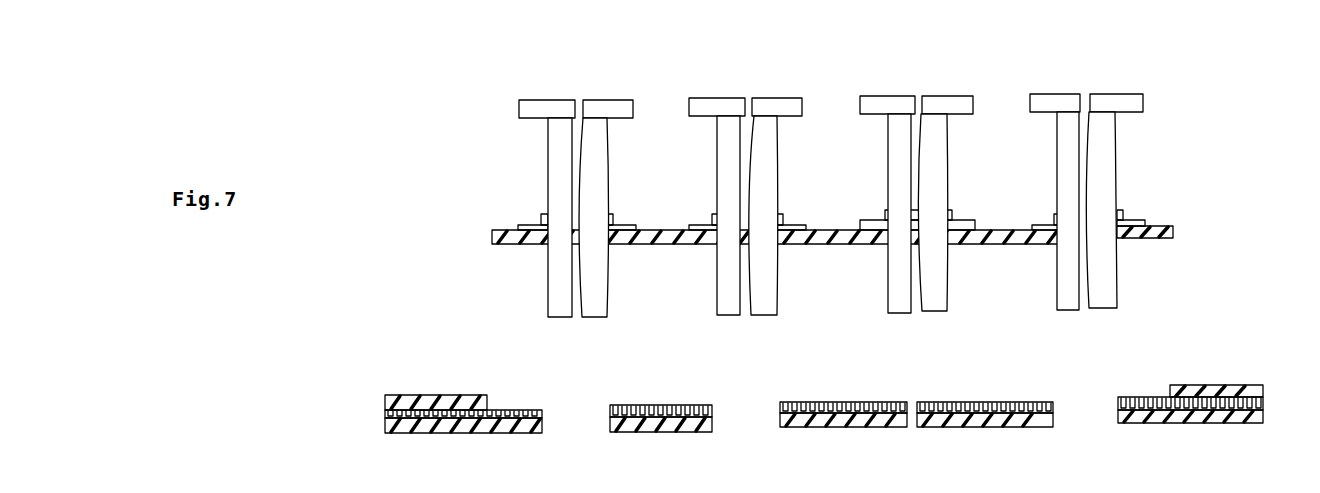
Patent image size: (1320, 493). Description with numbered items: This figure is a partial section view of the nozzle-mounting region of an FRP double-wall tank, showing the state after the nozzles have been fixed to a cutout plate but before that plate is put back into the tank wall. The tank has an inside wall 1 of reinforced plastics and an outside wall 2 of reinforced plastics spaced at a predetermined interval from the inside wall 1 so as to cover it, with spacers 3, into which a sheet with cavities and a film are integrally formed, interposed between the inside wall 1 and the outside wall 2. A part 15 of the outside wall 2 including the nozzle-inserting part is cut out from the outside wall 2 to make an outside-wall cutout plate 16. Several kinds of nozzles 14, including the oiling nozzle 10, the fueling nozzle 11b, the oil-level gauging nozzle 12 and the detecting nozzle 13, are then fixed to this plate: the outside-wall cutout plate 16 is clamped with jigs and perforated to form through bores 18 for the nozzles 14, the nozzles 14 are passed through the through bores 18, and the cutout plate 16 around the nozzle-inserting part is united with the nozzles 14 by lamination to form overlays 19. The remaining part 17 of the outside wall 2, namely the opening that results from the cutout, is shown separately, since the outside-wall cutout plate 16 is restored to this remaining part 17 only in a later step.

The nozzles 14 is at (831, 160).
The detecting nozzle 13 is at (610, 108).
The oiling nozzle 10 is at (727, 106).
The fueling nozzle 11b is at (885, 104).
The oil-level gauging nozzle 12 is at (1086, 185).
The part of the outside wall 15 is at (494, 228).
The outside-wall cutout plate 16 is at (1165, 225).
The overlays 19 is at (546, 225).
The through bores 18 is at (549, 252).
The remaining part of the outside wall 17 is at (1210, 377).
The outside wall 2 is at (1245, 388).
The spacers 3 is at (1269, 397).
The inside wall 1 is at (1240, 415).